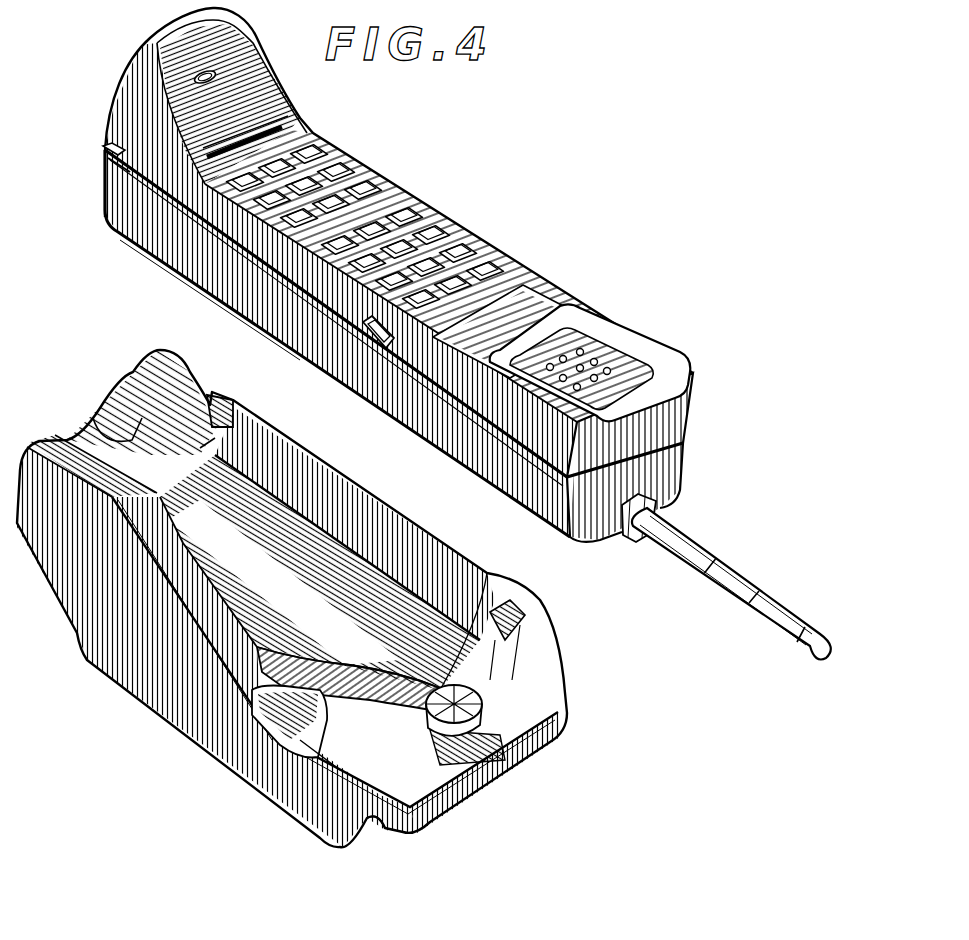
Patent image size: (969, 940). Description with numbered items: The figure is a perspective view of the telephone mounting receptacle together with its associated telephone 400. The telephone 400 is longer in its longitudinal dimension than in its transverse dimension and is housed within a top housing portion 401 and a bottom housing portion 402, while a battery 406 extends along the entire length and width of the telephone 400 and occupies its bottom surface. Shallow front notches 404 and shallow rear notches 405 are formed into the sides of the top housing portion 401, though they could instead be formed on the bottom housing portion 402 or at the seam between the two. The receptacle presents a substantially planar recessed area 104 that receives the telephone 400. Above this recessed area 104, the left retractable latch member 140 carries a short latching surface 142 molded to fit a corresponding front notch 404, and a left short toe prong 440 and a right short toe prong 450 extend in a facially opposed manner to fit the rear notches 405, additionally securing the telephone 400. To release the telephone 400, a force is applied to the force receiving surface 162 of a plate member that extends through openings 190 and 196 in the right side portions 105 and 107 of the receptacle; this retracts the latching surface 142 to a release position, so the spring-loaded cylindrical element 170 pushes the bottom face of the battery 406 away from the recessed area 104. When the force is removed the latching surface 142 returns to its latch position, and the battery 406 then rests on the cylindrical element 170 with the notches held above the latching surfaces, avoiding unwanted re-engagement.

The telephone 400 is at (439, 334).
The top housing portion 401 is at (392, 205).
The bottom housing portion 402 is at (118, 196).
The shallow front notch 404 is at (381, 338).
The shallow rear notch 405 is at (106, 150).
The battery 406 is at (140, 243).
The substantially planar recessed area 104 is at (290, 585).
The right side portion 105 is at (383, 826).
The right side portion 107 is at (335, 812).
The left retractable latch member 140 is at (480, 693).
The short latching surface 142 is at (505, 658).
The force receiving surface 162 is at (285, 728).
The spring-loaded cylindrical element 170 is at (507, 740).
The opening 190 is at (305, 738).
The opening 196 is at (322, 755).
The left short toe prong 440 is at (224, 405).
The right short toe prong 450 is at (210, 438).